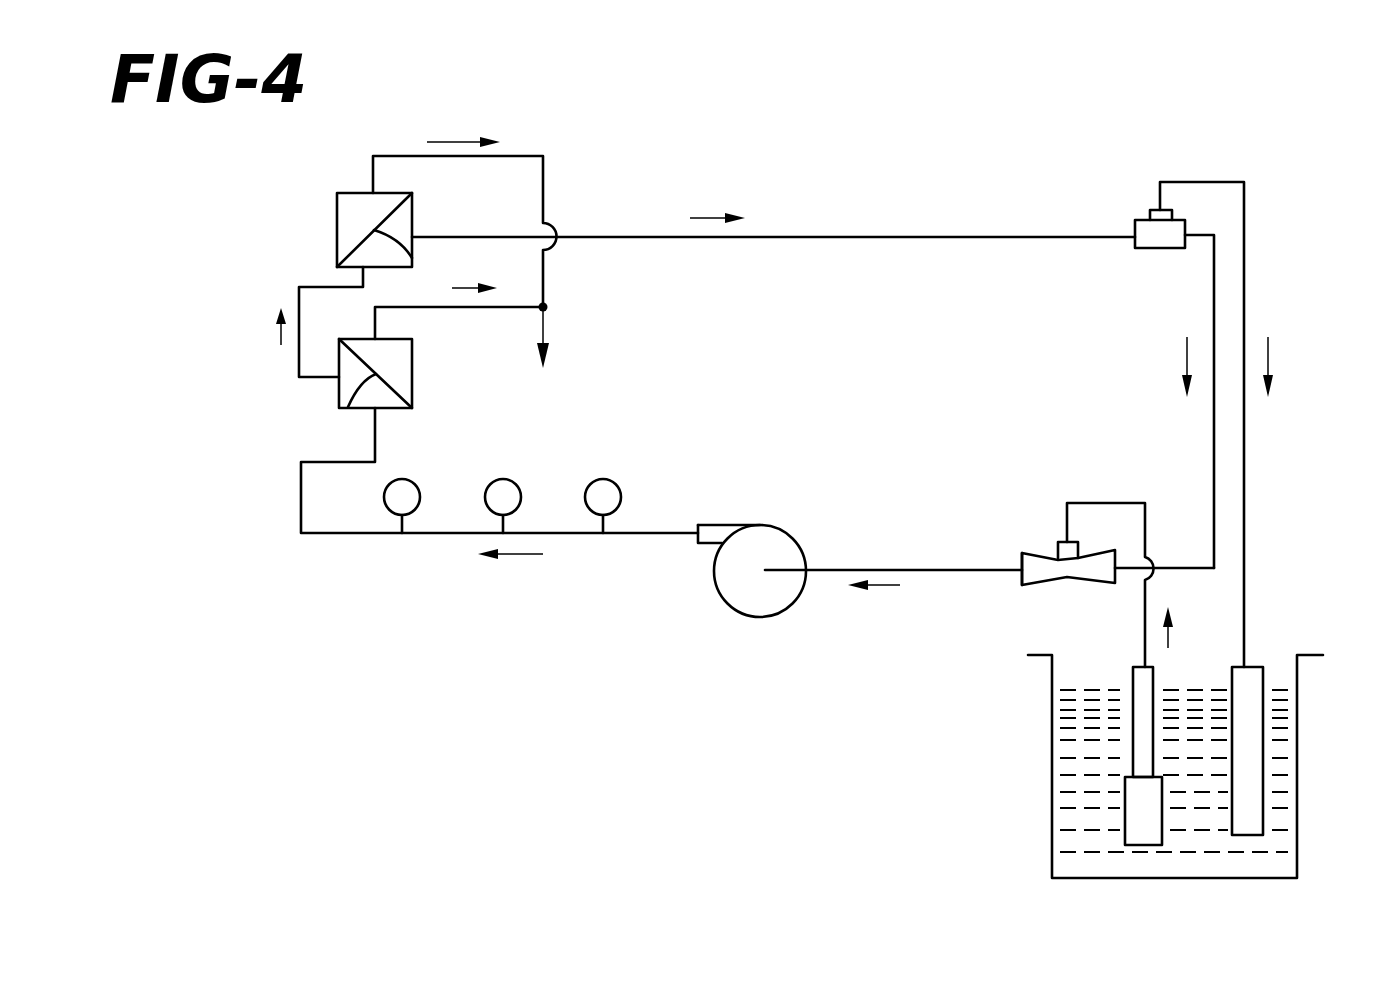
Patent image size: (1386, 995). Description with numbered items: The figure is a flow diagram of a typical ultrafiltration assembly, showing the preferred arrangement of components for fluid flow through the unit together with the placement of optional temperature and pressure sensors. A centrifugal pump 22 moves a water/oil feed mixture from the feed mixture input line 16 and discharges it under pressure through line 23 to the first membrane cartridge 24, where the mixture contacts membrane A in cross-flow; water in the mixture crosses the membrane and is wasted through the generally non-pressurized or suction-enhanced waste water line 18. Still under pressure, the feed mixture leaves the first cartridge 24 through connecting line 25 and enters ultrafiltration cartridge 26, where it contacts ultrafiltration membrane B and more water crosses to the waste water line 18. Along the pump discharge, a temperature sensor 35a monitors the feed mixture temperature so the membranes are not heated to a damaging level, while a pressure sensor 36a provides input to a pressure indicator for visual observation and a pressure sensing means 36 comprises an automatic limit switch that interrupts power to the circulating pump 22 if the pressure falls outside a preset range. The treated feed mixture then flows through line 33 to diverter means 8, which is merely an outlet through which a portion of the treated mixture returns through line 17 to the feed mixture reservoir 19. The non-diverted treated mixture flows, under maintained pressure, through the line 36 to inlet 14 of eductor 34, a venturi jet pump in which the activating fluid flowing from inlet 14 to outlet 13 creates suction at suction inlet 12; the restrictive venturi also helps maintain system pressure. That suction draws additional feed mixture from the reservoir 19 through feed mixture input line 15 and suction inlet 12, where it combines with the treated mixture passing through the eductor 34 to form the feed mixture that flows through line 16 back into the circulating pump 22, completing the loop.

The diverter means 8 is at (1156, 215).
The suction inlet 12 is at (1058, 546).
The outlet 13 is at (1031, 552).
The inlet 14 is at (1113, 558).
The feed mixture input line 15 is at (1145, 605).
The feed mixture input line 16 is at (945, 570).
The line 17 is at (1244, 262).
The waste water line 18 is at (546, 327).
The feed mixture reservoir 19 is at (1052, 770).
The centrifugal pump 22 is at (757, 525).
The line 23 is at (348, 533).
The membrane cartridge 24 is at (412, 356).
The connecting line 25 is at (299, 297).
The ultrafiltration cartridge 26 is at (337, 213).
The line 33 is at (1050, 236).
The eductor 34 is at (1055, 585).
The temperature sensor 35a is at (503, 479).
The pressure sensing means 36 is at (402, 479).
The pressure sensor 36a is at (603, 479).
The membrane A is at (352, 410).
The ultrafiltration membrane B is at (412, 258).